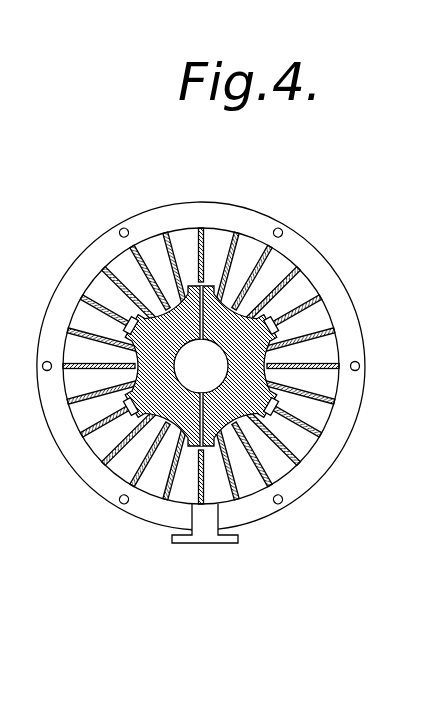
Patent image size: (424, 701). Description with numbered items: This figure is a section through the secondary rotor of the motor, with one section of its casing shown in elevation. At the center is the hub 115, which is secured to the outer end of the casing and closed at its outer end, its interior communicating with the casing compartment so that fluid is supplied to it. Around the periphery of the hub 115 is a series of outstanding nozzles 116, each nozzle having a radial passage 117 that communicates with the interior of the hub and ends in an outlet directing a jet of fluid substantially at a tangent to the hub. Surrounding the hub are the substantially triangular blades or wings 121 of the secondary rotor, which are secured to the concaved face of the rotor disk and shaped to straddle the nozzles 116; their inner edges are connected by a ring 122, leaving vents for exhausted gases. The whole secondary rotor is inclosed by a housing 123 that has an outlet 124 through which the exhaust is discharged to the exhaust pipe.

The hub 115 is at (220, 317).
The nozzle 116 is at (197, 294).
The radial passage 117 is at (245, 325).
The blades or wings 121 is at (141, 445).
The ring 122 is at (291, 436).
The housing 123 is at (336, 419).
The outlet 124 is at (212, 533).